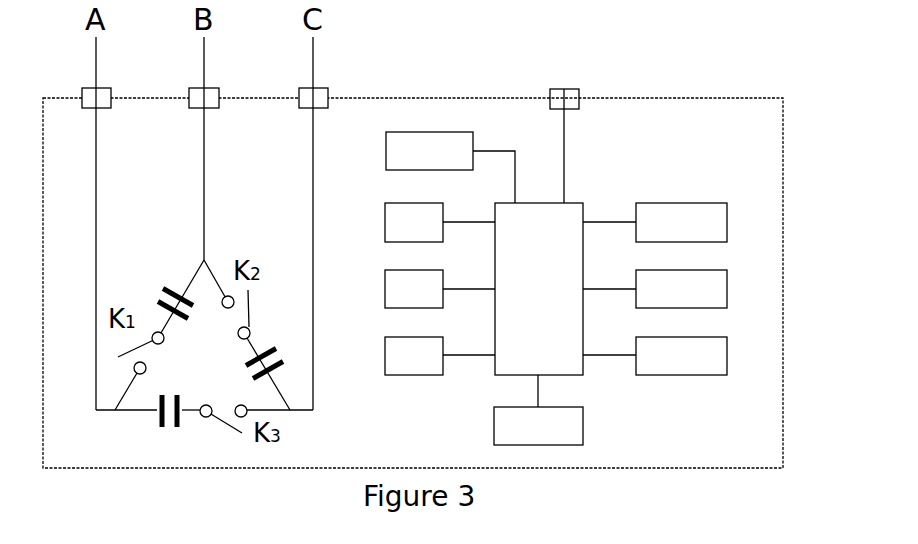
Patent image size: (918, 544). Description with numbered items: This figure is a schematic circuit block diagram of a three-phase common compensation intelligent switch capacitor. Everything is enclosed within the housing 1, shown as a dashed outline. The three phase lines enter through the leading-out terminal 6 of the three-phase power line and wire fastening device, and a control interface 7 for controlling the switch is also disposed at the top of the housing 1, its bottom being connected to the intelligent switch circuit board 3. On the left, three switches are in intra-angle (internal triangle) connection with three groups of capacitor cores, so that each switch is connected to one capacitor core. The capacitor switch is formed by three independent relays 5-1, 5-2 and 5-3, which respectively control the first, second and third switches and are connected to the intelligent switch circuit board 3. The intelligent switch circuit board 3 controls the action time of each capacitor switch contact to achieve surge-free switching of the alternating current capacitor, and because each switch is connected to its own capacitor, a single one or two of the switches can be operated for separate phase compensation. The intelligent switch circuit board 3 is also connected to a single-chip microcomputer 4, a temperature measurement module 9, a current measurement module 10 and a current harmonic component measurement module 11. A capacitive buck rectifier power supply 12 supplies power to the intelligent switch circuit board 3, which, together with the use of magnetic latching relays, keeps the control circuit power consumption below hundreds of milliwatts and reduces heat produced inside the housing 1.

The housing 1 is at (413, 257).
The intelligent switch circuit board 3 is at (539, 289).
The single-chip microcomputer 4 is at (538, 410).
The relay 5-1 is at (440, 222).
The relay 5-2 is at (440, 289).
The relay 5-3 is at (440, 356).
The leading-out terminal of three-phase power line and wire fastening device 6 is at (241, 77).
The control interface 7 is at (597, 125).
The temperature measurement module 9 is at (655, 222).
The current measurement module 10 is at (655, 289).
The current harmonic component measurement module 11 is at (655, 356).
The capacitive buck rectifier power supply 12 is at (450, 167).